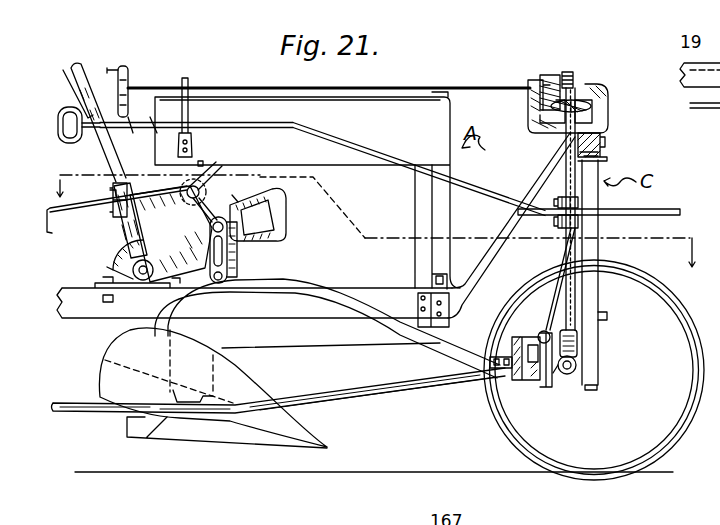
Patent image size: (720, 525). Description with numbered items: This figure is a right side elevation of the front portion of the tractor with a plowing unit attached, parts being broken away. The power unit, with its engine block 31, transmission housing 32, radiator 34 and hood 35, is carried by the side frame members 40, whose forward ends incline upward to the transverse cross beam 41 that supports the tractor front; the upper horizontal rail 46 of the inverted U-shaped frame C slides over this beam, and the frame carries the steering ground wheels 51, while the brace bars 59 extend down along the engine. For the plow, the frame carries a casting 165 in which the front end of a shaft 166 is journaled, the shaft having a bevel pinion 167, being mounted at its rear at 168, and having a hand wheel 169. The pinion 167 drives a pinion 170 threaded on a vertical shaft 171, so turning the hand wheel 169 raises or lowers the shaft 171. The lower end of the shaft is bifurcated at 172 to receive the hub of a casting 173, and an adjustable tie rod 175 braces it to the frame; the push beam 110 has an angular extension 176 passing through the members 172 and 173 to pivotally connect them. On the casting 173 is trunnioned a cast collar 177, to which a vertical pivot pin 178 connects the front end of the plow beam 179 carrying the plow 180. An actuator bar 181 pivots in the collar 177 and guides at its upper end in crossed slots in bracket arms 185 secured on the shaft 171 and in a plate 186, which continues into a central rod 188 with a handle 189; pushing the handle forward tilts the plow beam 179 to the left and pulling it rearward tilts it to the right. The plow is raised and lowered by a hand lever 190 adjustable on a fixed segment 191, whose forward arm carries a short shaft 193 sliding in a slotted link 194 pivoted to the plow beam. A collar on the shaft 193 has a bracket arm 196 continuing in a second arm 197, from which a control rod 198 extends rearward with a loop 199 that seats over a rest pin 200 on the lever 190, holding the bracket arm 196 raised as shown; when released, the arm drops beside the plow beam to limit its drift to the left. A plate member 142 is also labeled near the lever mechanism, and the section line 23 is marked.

The section line 23 is at (380, 213).
The engine block 31 is at (337, 338).
The transmission housing 32 is at (100, 347).
The radiator 34 is at (442, 221).
The hood 35 is at (440, 120).
The side frame members 40 is at (370, 297).
The transverse cross beam 41 is at (447, 325).
The upper horizontal rail 46 is at (600, 133).
The ground wheels 51 is at (643, 458).
The brace bars 59 is at (157, 142).
The push beam 110 is at (402, 387).
The sector plate 142 is at (183, 243).
The casting 165 is at (607, 103).
The shaft 166 is at (413, 68).
The bevel pinion 167 is at (548, 72).
The shaft mounting 168 is at (187, 80).
The hand wheel 169 is at (128, 76).
The pinion 170 is at (593, 97).
The vertical shaft 171 is at (568, 173).
The bifurcated lower end 172 is at (573, 342).
The casting 173 is at (553, 373).
The adjustable tie rod 175 is at (607, 317).
The angular extension 176 is at (578, 368).
The cast collar 177 is at (538, 393).
The vertical pivot pin 178 is at (512, 395).
The plow beam 179 is at (397, 332).
The plow 180 is at (250, 435).
The actuator bar 181 is at (557, 283).
The bracket arms 185 is at (578, 203).
The plate 186 is at (670, 210).
The central rod 188 is at (342, 147).
The handle 189 is at (75, 100).
The hand lever 190 is at (107, 153).
The fixed segment 191 is at (113, 257).
The pin or short shaft 193 is at (232, 195).
The slotted link 194 is at (237, 258).
The bracket arm 196 is at (287, 213).
The second arm 197 is at (205, 182).
The control rod 198 is at (80, 212).
The notch forming loop 199 is at (113, 195).
The rest pin 200 is at (116, 178).